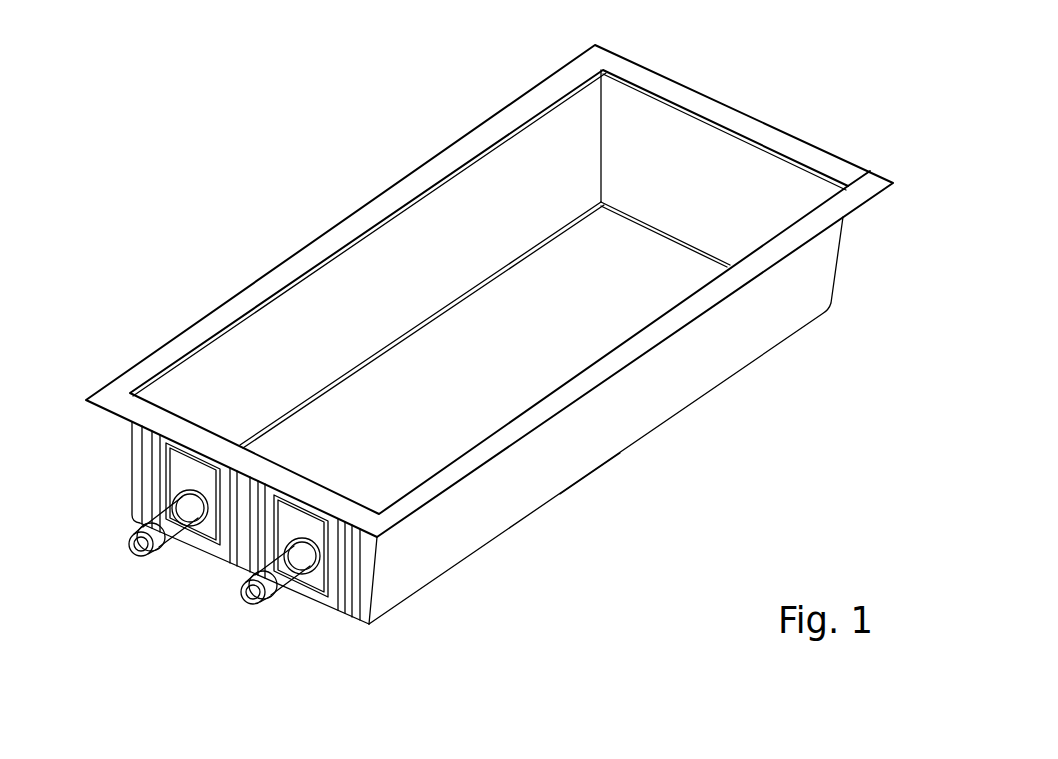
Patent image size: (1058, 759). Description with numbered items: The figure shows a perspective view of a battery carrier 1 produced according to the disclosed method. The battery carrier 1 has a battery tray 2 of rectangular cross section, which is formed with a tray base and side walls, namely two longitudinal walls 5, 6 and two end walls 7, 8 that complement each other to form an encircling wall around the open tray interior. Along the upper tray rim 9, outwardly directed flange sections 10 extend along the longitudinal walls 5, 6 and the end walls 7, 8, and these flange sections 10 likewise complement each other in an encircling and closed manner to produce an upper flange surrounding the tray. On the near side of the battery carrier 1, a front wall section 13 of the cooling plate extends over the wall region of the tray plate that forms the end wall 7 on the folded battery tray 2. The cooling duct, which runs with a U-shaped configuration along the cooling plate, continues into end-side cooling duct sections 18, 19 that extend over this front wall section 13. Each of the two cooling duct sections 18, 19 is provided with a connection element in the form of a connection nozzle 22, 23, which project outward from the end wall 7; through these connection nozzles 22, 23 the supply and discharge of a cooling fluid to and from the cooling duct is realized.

The battery carrier 1 is at (296, 166).
The battery tray 2 is at (670, 388).
The longitudinal wall 5 is at (540, 482).
The longitudinal wall 6 is at (497, 187).
The end wall 7 is at (136, 455).
The end wall 8 is at (693, 145).
The upper tray rim 9 is at (860, 223).
The flange section 10 is at (820, 157).
The front wall section 13 is at (357, 580).
The cooling duct section 18 is at (200, 548).
The cooling duct section 19 is at (316, 596).
The connection nozzle 22 is at (175, 530).
The connection nozzle 23 is at (282, 582).